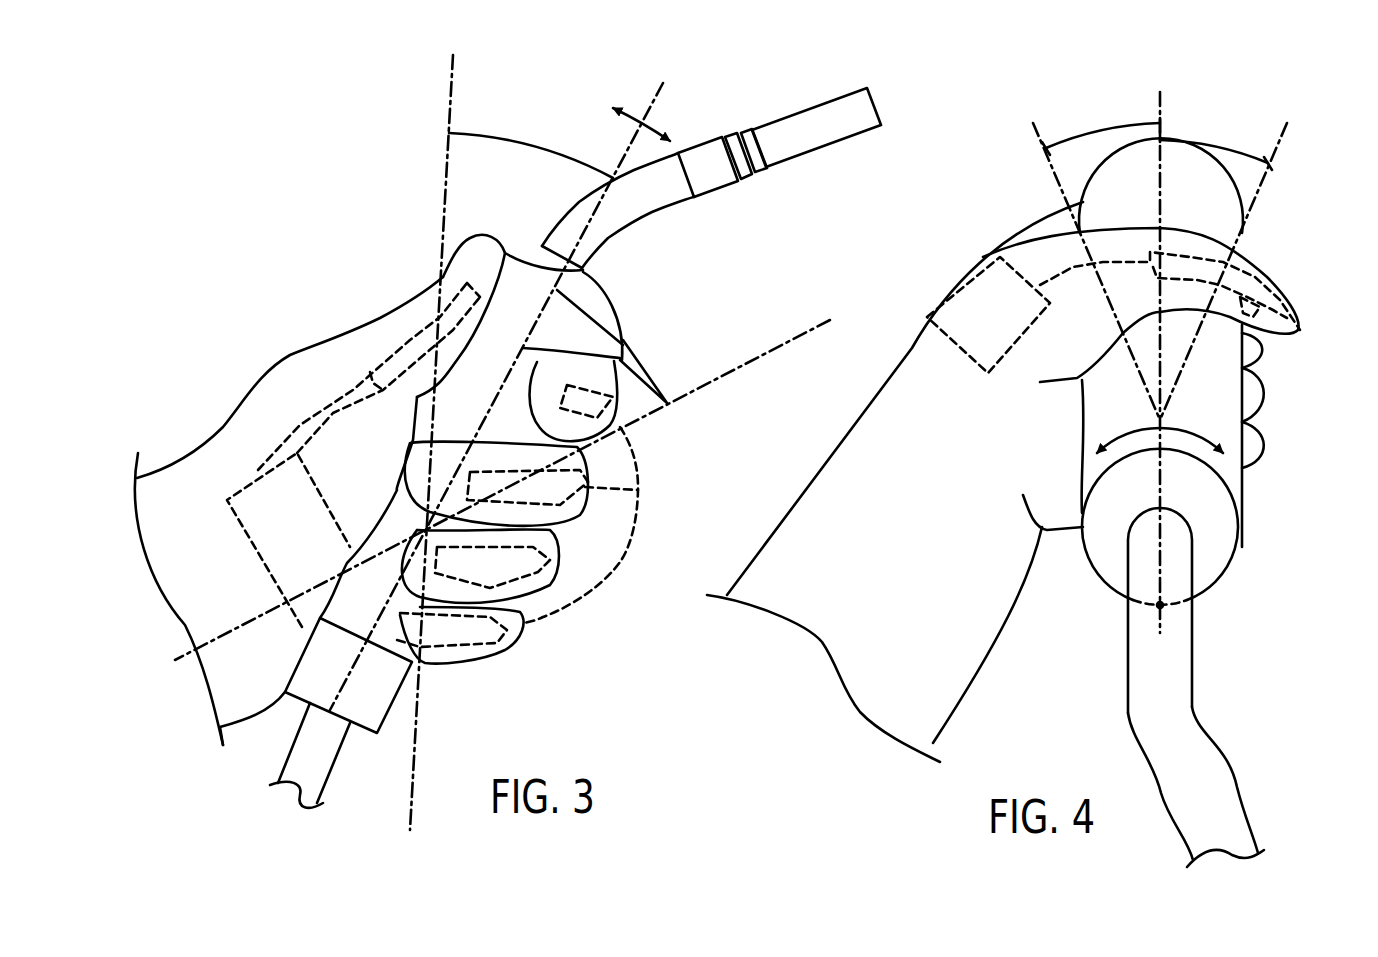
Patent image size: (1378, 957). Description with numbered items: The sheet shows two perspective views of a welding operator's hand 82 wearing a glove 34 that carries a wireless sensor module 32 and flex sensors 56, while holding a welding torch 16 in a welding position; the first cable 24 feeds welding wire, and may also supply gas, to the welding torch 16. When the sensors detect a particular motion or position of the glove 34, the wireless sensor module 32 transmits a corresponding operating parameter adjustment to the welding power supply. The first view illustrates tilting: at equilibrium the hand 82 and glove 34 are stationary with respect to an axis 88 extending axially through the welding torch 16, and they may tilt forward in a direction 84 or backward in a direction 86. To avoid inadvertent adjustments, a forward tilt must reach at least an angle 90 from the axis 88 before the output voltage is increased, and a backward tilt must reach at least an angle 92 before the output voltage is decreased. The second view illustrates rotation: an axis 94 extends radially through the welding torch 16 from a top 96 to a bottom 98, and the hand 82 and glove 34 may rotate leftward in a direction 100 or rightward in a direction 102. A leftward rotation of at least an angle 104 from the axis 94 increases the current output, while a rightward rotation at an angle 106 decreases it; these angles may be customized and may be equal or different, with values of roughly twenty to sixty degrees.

In FIG. 3, the welding torch 16 is at (362, 698).
In FIG. 4, the welding torch 16 is at (1222, 540).
In FIG. 3, the first cable 24 is at (300, 795).
In FIG. 4, the first cable 24 is at (1222, 780).
In FIG. 3, the wireless sensor module 32 is at (240, 488).
In FIG. 4, the wireless sensor module 32 is at (958, 348).
In FIG. 3, the glove 34 is at (315, 360).
In FIG. 4, the glove 34 is at (1253, 273).
In FIG. 3, the flex sensors 56 is at (410, 343).
In FIG. 4, the flex sensors 56 is at (1298, 332).
In FIG. 3, the welding operator's hand 82 is at (188, 443).
In FIG. 4, the welding operator's hand 82 is at (926, 282).
In FIG. 3, the direction 84 is at (668, 127).
In FIG. 3, the direction 86 is at (630, 116).
In FIG. 3, the axis 88 is at (583, 232).
In FIG. 3, the angle 90 is at (630, 347).
In FIG. 3, the angle 92 is at (535, 148).
In FIG. 4, the axis 94 is at (1162, 102).
In FIG. 4, the top 96 is at (1165, 450).
In FIG. 4, the bottom 98 is at (1162, 606).
In FIG. 4, the direction 100 is at (1133, 433).
In FIG. 4, the direction 102 is at (1180, 425).
In FIG. 4, the angle 104 is at (1097, 128).
In FIG. 4, the angle 106 is at (1225, 146).